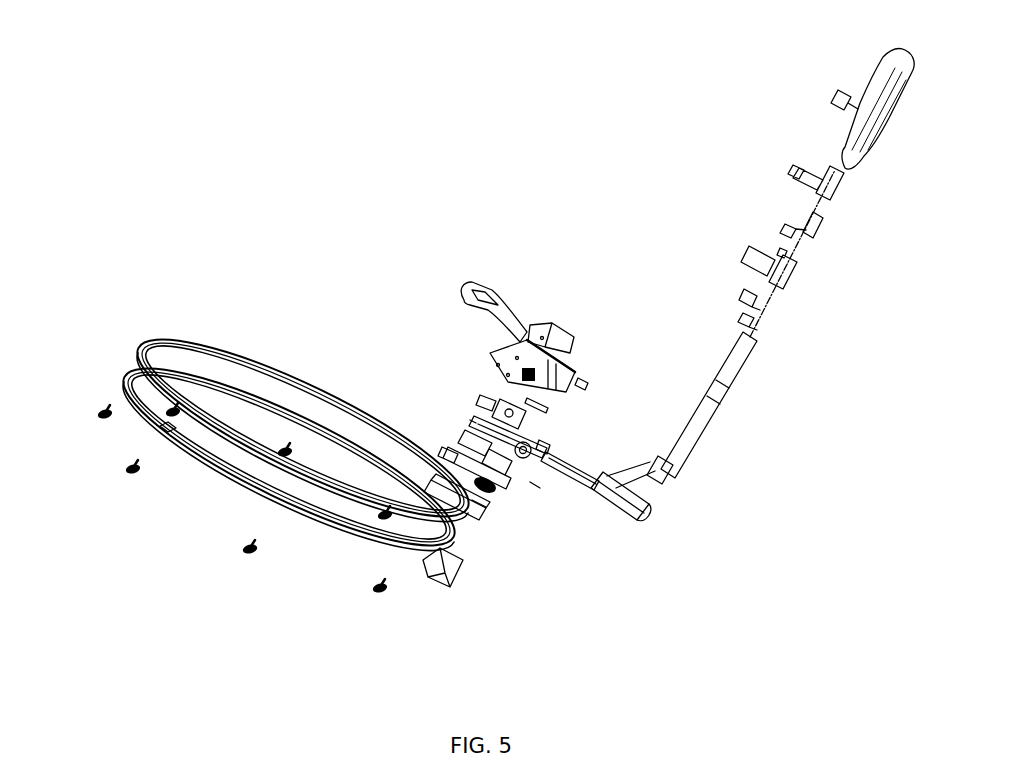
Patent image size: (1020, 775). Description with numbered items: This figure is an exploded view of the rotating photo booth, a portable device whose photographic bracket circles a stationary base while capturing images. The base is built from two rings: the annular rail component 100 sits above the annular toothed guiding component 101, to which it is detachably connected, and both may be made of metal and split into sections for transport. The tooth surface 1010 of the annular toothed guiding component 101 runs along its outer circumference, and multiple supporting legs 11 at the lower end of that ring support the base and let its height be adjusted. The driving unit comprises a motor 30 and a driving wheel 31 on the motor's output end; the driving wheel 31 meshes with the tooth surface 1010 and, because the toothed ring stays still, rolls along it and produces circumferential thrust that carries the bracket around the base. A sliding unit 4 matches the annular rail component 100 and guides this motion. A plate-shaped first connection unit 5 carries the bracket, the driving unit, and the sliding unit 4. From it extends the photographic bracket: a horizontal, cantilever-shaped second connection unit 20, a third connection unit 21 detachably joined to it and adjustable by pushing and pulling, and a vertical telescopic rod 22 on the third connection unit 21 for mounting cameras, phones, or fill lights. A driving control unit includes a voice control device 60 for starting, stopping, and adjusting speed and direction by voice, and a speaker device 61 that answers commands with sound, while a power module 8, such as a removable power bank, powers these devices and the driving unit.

The annular rail component 100 is at (135, 345).
The annular toothed guiding component 101 is at (115, 377).
The tooth surface 1010 is at (163, 430).
The supporting legs 11 is at (128, 478).
The power module 8 is at (548, 325).
The speaker device 61 is at (548, 412).
The voice control device 60 is at (474, 402).
The second connection unit 20 is at (468, 422).
The motor 30 is at (437, 436).
The driving wheel 31 is at (500, 493).
The sliding unit 4 is at (480, 505).
The first connection unit 5 is at (536, 490).
The third connection unit 21 is at (581, 492).
The telescopic rod 22 is at (697, 433).